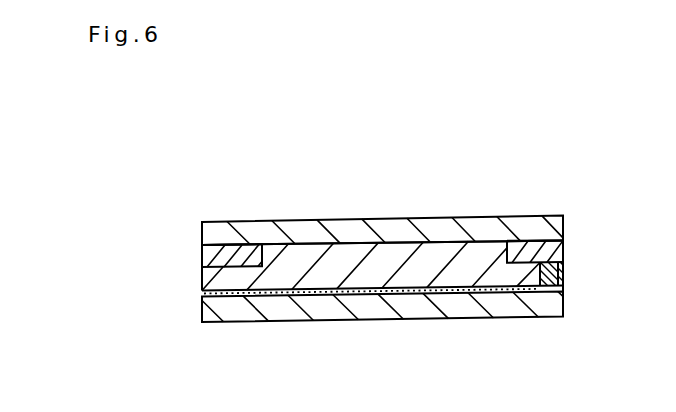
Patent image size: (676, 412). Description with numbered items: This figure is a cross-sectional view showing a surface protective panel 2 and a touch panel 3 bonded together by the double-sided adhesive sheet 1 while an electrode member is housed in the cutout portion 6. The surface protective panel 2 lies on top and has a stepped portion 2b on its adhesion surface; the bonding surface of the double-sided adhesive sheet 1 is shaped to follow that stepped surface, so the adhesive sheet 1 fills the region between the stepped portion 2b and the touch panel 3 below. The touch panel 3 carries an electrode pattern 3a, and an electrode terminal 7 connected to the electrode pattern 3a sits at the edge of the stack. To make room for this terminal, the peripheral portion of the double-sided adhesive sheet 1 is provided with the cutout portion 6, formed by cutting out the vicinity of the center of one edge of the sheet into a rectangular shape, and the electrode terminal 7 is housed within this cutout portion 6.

The double-sided adhesive sheet 1 is at (355, 269).
The surface protective panel 2 is at (382, 198).
The stepped portion 2b is at (341, 234).
The touch panel 3 is at (392, 340).
The electrode pattern 3a is at (329, 322).
The cutout portion 6 is at (567, 252).
The electrode terminal 7 is at (595, 280).